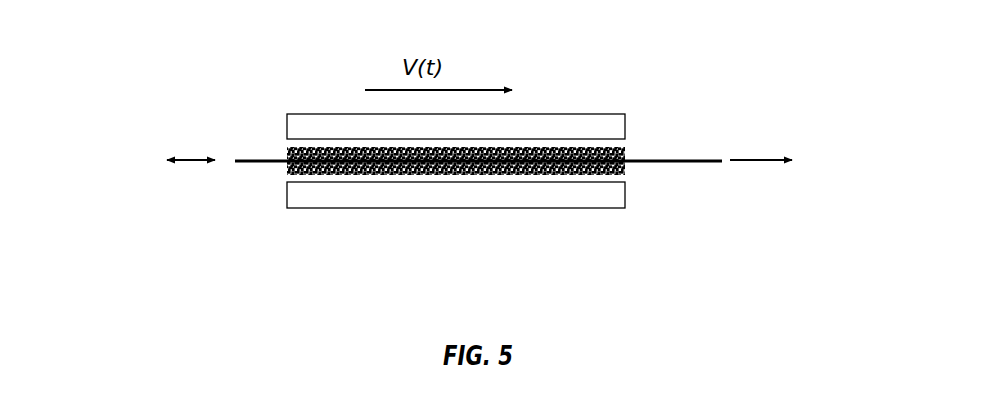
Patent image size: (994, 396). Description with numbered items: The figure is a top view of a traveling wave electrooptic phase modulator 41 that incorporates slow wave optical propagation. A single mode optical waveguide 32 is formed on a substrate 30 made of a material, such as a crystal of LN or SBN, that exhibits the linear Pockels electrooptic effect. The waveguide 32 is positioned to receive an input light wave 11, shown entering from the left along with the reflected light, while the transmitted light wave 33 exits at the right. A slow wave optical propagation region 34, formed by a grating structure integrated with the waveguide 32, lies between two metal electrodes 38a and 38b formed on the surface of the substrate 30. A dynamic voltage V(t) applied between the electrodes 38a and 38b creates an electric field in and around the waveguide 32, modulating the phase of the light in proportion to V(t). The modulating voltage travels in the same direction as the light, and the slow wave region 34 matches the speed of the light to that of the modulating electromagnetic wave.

The input light wave 11 is at (185, 164).
The substrate 30 is at (443, 156).
The single mode optical waveguide 32 is at (256, 164).
The transmitted light wave 33 is at (753, 162).
The slow wave optical propagation region 34 is at (625, 158).
The metal electrode 38a is at (287, 114).
The metal electrode 38b is at (287, 203).
The phase modulator 41 is at (147, 263).